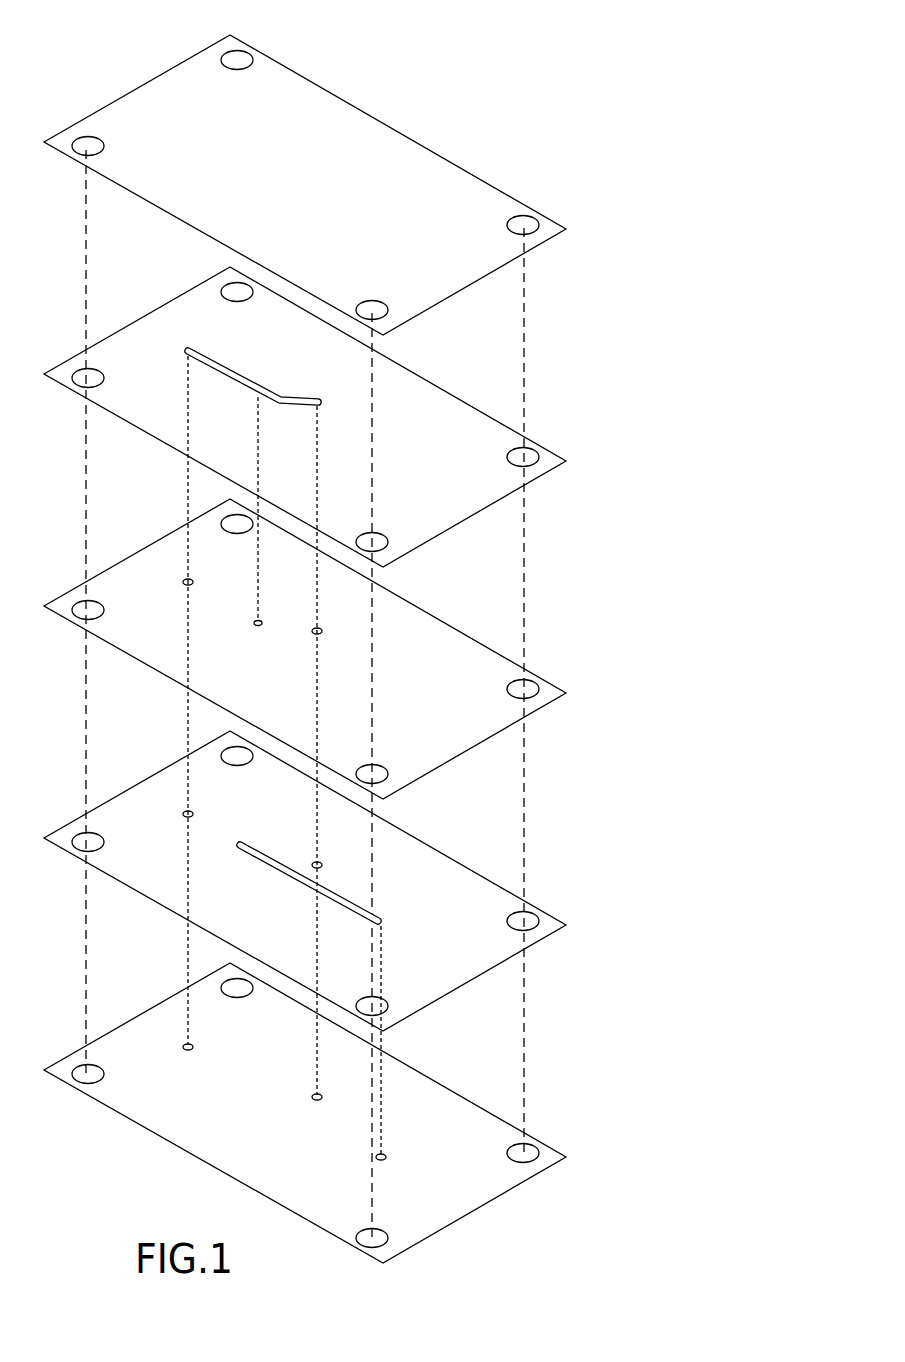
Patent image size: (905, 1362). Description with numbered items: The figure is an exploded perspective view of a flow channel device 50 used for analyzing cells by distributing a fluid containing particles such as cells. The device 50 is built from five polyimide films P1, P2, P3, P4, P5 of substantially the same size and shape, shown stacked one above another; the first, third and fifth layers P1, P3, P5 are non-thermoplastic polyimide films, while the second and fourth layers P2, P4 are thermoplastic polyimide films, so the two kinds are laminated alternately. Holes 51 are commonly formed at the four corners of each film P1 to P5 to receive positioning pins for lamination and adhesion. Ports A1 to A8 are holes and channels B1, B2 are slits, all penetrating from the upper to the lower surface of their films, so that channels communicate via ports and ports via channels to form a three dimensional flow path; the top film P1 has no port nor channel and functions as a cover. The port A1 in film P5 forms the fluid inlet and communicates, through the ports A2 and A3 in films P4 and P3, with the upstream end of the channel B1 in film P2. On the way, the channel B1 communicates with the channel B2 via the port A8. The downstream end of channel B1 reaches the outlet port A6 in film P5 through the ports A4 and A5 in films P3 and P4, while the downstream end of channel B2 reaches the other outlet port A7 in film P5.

The flow channel device 50 is at (399, 72).
The holes 51 is at (230, 58).
The polyimide film P1 is at (453, 163).
The polyimide film P2 is at (453, 395).
The polyimide film P3 is at (453, 627).
The polyimide film P4 is at (453, 860).
The polyimide film P5 is at (453, 1092).
The channel B1 is at (197, 355).
The channel B2 is at (340, 900).
The port A1 is at (186, 1043).
The port A2 is at (186, 810).
The port A3 is at (186, 578).
The port A4 is at (317, 628).
The port A5 is at (317, 860).
The port A6 is at (313, 1097).
The port A7 is at (386, 1157).
The port A8 is at (258, 620).